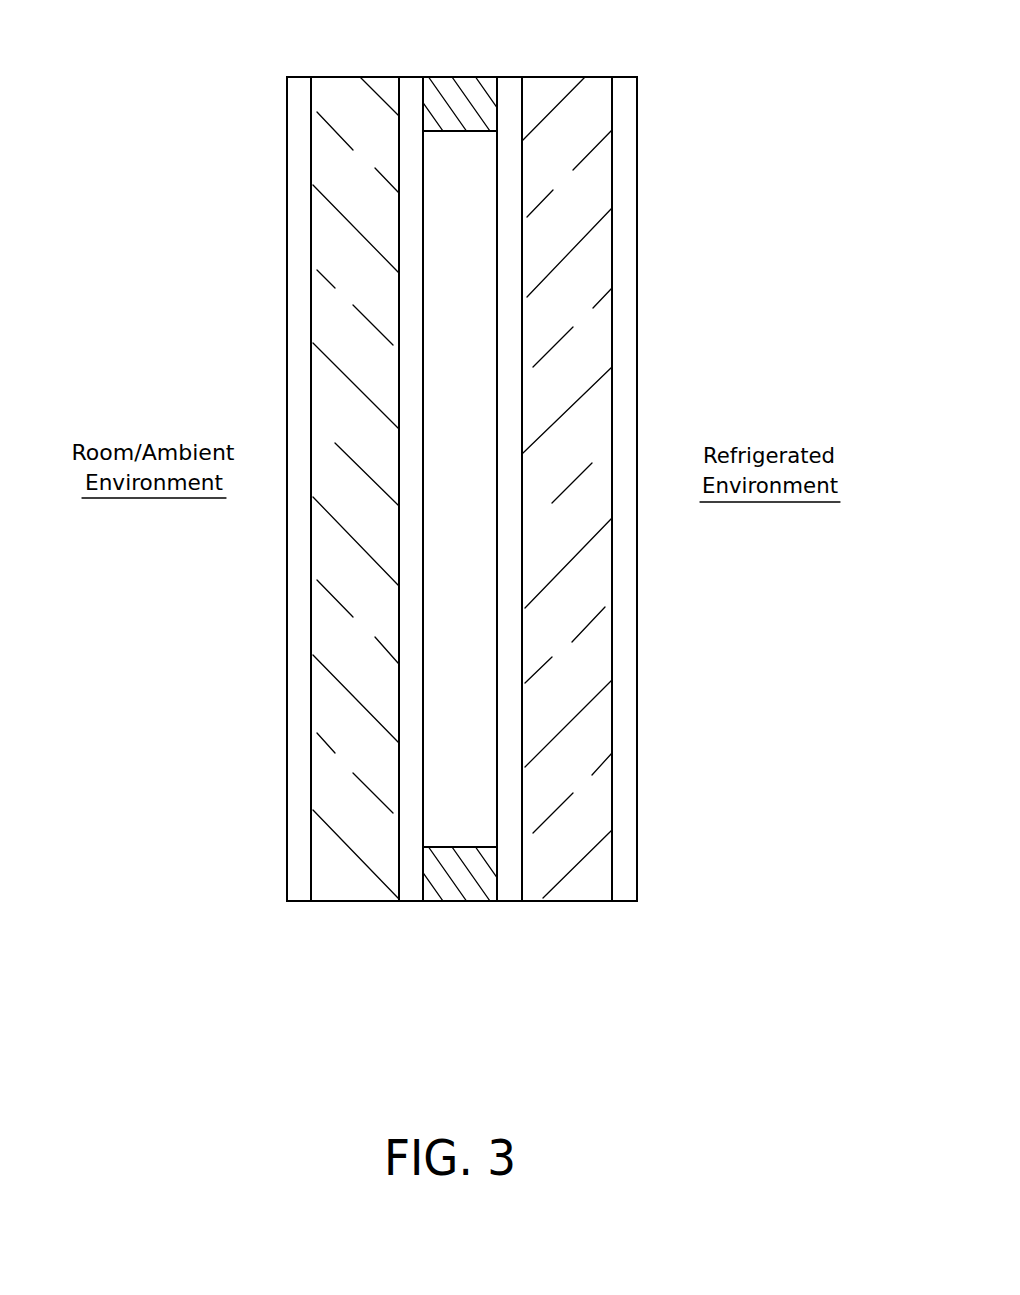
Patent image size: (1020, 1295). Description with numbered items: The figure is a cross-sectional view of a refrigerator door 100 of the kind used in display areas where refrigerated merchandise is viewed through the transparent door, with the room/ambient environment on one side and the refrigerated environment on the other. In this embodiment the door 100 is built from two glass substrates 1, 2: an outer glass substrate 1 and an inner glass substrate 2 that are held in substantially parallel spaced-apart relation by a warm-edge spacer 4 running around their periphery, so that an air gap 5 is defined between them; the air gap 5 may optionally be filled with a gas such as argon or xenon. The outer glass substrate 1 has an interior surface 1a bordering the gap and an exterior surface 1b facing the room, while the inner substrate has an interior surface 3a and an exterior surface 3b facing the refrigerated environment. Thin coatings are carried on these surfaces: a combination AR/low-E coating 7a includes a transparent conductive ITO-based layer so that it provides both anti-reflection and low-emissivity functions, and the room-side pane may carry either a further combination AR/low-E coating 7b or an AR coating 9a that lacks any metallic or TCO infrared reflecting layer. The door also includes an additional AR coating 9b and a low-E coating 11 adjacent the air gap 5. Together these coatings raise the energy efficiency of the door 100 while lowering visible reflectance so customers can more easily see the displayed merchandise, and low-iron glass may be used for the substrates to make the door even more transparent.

The refrigerator door 100 is at (240, 110).
The outer glass substrate 1 is at (358, 838).
The interior surface of outer glass substrate 1a is at (315, 891).
The exterior surface of outer glass substrate 1b is at (310, 685).
The inner glass substrate 2 is at (567, 870).
The interior surface of inner glass substrate 3a is at (506, 808).
The exterior surface of inner glass substrate 3b is at (613, 703).
The spacer 4 is at (460, 102).
The air gap 5 is at (463, 336).
The combination AR/low-E coating 7a is at (625, 182).
The combination AR/low-E coating 7b is at (215, 489).
The AR coating 9a is at (297, 752).
The AR coating 9b is at (410, 867).
The low-E coating 11 is at (507, 867).